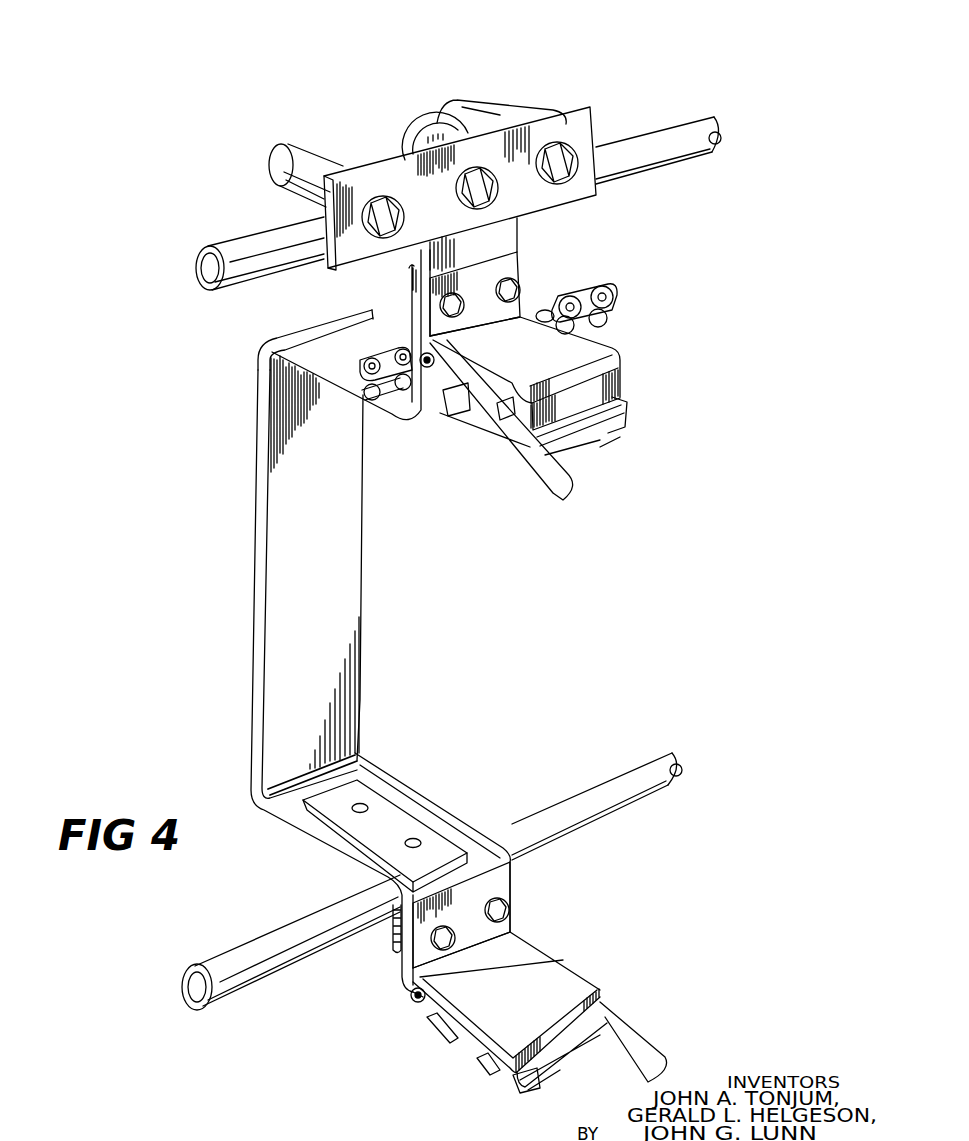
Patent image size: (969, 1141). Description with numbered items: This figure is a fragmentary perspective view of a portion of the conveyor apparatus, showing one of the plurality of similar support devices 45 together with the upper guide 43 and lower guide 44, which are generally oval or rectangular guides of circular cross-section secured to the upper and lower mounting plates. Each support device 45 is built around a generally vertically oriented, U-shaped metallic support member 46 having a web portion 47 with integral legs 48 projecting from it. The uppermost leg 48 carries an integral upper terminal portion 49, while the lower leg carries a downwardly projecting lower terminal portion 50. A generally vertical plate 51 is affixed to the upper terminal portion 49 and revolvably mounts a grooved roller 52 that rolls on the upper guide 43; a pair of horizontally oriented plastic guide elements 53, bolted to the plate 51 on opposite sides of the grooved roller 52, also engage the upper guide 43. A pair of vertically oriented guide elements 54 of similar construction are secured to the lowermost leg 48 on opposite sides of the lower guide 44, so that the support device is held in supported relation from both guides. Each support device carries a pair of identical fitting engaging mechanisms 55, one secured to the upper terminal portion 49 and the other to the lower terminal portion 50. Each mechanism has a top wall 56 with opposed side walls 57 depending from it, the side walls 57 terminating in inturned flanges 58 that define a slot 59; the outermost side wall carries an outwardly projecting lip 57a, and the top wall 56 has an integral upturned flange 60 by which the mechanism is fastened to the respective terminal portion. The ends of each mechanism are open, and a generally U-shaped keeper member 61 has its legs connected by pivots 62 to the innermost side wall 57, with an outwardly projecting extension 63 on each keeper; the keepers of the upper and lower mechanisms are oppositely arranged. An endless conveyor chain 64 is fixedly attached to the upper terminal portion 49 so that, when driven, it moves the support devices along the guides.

The upper guide 43 is at (237, 250).
The lower guide 44 is at (608, 787).
The support device 45 is at (301, 621).
The support member 46 is at (263, 662).
The web portion 47 is at (360, 603).
The legs 48 is at (340, 340).
The upper terminal portion 49 is at (513, 237).
The lower terminal portion 50 is at (410, 967).
The plate 51 is at (593, 127).
The grooved roller 52 is at (427, 130).
The guide elements 53 is at (290, 150).
The guide elements 54 is at (390, 935).
The fitting engaging mechanism 55 is at (550, 721).
The top wall 56 is at (590, 350).
The side walls 57 is at (620, 380).
The lip 57a is at (597, 440).
The inturned flanges 58 is at (463, 413).
The slot 59 is at (503, 413).
The upturned flange 60 is at (513, 265).
The keeper member 61 is at (620, 413).
The pivots 62 is at (427, 413).
The extension 63 is at (560, 487).
The endless conveyor chain 64 is at (590, 315).